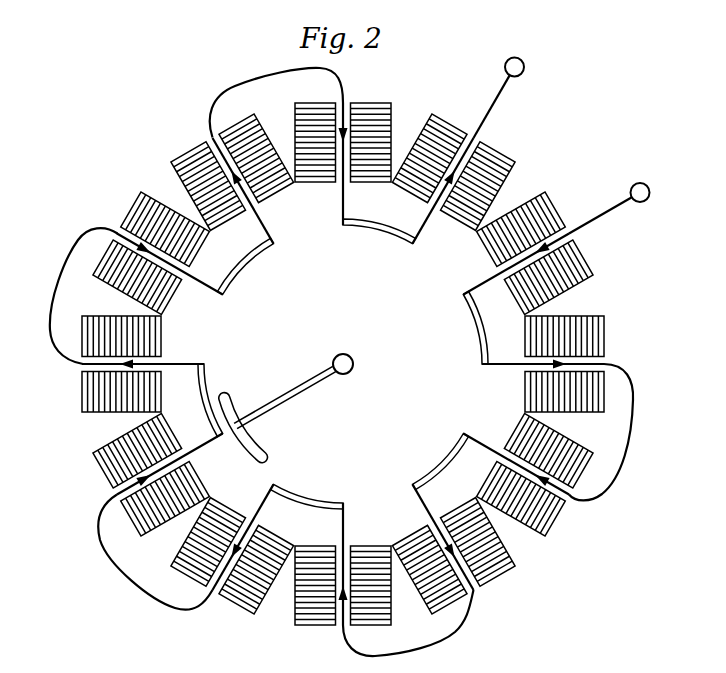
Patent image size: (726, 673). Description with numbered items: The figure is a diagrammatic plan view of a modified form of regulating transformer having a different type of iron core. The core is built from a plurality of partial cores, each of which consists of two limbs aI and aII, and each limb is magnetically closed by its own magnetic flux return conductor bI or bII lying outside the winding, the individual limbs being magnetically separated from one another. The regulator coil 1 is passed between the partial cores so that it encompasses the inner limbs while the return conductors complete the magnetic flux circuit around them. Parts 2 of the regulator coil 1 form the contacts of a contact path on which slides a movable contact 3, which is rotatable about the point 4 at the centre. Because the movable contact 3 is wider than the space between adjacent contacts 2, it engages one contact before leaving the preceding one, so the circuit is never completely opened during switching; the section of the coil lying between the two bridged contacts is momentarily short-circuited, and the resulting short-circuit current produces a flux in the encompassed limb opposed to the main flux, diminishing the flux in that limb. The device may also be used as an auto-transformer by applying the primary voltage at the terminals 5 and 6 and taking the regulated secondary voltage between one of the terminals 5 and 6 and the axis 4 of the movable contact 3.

The regulator coil 1 is at (161, 597).
The contacts of the regulator coil 2 is at (242, 270).
The movable contact 3 is at (271, 449).
The axis of the movable contact 4 is at (351, 357).
The terminal 5 is at (516, 65).
The terminal 6 is at (641, 191).
The limb of partial core aI is at (250, 140).
The magnetic flux return conductor bI is at (69, 425).
The limb of partial core aII is at (110, 272).
The magnetic flux return conductor bII is at (147, 216).